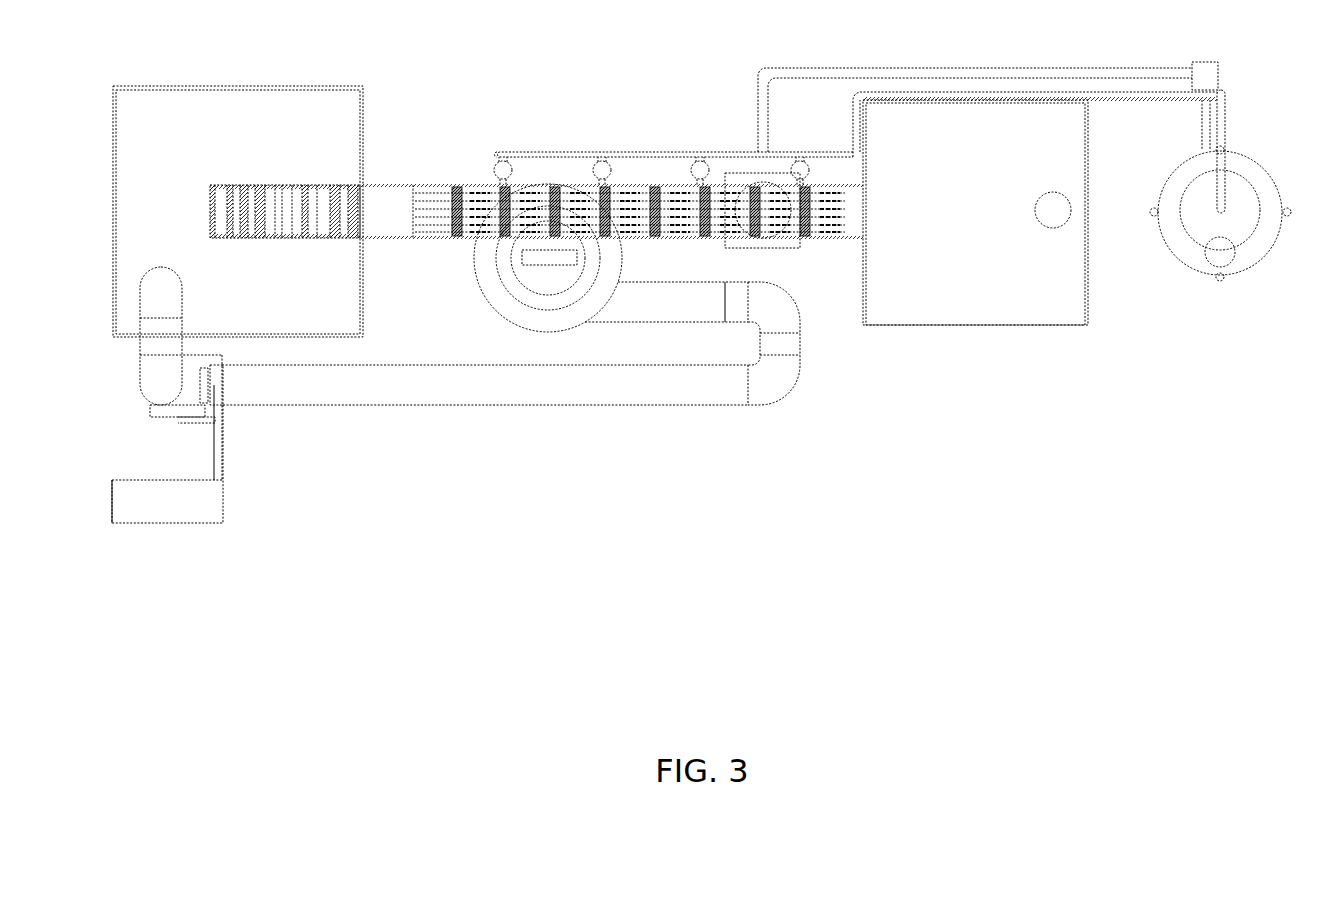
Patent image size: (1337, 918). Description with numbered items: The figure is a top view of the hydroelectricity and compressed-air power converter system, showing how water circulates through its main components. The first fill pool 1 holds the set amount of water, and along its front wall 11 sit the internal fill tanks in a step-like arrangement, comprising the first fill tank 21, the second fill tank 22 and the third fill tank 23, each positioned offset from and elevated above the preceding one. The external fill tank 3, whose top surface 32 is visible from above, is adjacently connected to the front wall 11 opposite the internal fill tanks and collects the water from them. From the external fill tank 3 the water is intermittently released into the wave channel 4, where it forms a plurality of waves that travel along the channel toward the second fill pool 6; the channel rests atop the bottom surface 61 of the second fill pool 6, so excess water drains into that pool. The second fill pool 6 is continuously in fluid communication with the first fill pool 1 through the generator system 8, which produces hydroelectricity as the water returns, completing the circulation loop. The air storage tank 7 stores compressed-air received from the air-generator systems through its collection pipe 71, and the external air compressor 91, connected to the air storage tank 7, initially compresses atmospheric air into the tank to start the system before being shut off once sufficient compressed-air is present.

The first fill pool 1 is at (283, 82).
The front wall 11 is at (365, 108).
The first fill tank 21 is at (330, 182).
The second fill tank 22 is at (285, 244).
The third fill tank 23 is at (247, 182).
The external fill tank 3 is at (387, 182).
The top surface 32 is at (397, 220).
The wave channel 4 is at (458, 245).
The second fill pool 6 is at (1095, 272).
The bottom surface 61 is at (904, 297).
The air storage tank 7 is at (1263, 248).
The collection pipe 71 is at (1224, 125).
The external air compressor 91 is at (1203, 258).
The generator system 8 is at (453, 417).